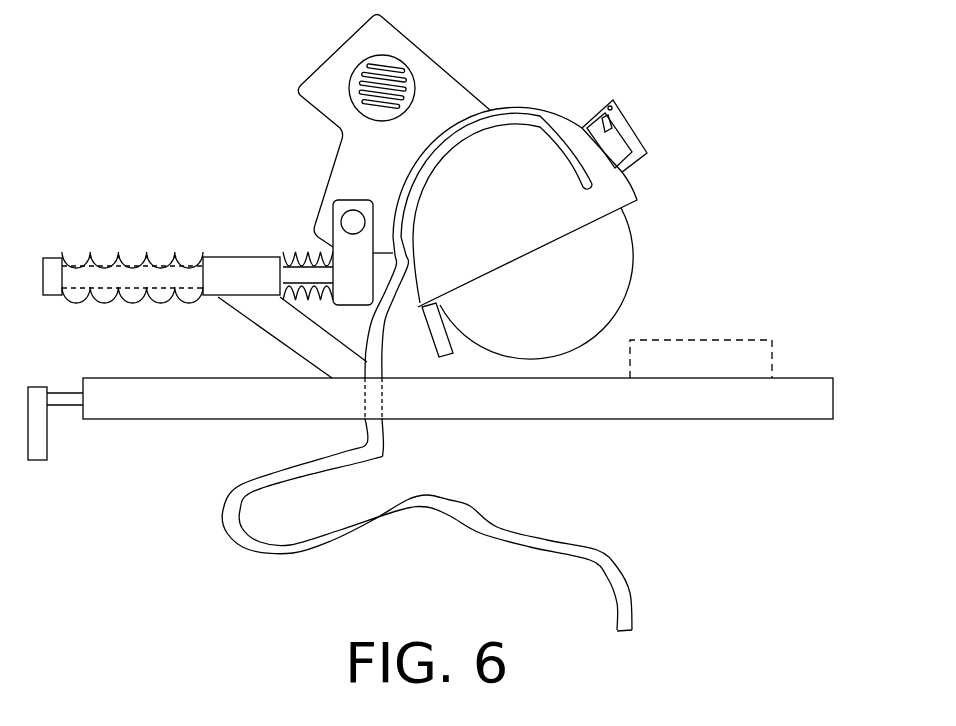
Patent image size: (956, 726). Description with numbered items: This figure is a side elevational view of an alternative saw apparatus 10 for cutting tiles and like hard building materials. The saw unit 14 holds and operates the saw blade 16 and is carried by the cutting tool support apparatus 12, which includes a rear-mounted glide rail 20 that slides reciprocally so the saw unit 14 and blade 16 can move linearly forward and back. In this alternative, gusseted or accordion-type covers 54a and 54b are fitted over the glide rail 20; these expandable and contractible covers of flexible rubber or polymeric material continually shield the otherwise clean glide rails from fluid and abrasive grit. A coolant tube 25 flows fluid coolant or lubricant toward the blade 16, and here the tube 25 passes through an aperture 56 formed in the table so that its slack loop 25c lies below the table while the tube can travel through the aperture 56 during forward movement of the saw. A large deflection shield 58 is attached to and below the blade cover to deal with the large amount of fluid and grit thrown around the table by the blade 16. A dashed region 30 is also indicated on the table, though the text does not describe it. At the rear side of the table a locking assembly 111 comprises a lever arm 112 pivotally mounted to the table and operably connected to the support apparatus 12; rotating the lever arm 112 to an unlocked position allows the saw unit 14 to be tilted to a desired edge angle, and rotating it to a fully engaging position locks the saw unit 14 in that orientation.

The saw apparatus 10 is at (258, 18).
The saw unit 14 is at (572, 78).
The saw blade 16 is at (562, 318).
The cutting tool support apparatus 12 is at (178, 335).
The glide rail 20 is at (150, 275).
The gusseted or accordion-type cover 54a is at (118, 260).
The gusseted or accordion-type cover 54b is at (305, 253).
The coolant tube 25 is at (403, 208).
The loop 25c is at (275, 512).
The dust collector 30 is at (653, 347).
The aperture 56 is at (383, 392).
The deflection shield 58 is at (445, 342).
The locking assembly 111 is at (52, 490).
The lever arm 112 is at (47, 428).